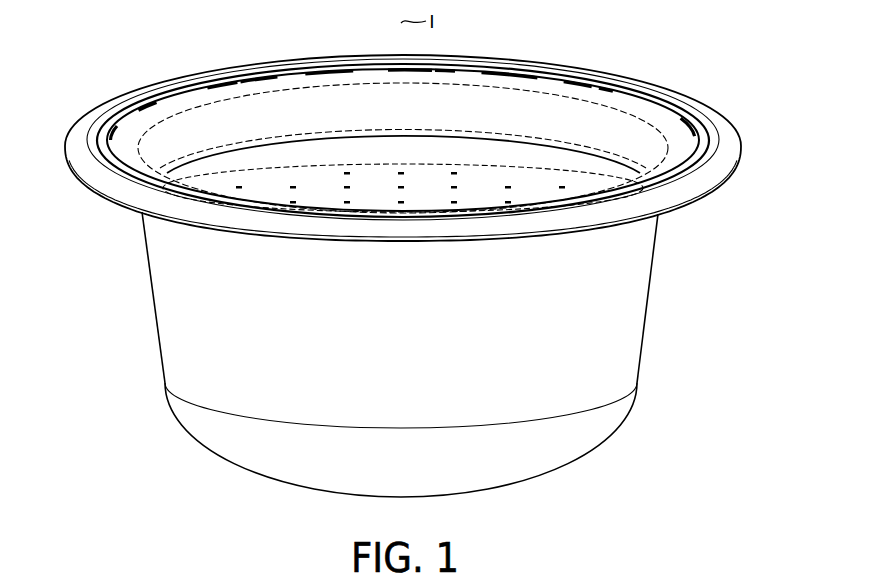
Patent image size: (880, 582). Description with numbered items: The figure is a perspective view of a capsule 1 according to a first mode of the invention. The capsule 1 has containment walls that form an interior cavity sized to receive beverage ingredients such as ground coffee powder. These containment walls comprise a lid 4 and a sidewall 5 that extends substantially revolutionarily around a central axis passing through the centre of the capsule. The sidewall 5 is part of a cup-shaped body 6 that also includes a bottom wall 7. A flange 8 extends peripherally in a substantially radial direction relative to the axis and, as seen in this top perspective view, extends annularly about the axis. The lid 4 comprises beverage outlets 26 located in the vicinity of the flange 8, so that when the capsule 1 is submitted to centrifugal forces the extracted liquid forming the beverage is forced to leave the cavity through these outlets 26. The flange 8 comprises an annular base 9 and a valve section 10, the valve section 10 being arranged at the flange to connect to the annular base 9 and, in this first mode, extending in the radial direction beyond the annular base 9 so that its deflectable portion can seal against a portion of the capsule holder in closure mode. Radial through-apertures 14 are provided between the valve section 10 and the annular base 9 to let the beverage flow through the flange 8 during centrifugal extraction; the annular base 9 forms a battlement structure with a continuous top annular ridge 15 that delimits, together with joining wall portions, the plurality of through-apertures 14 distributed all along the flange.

The capsule 1 is at (116, 292).
The lid 4 is at (257, 181).
The sidewall 5 is at (636, 279).
The cup-shaped body 6 is at (664, 350).
The bottom wall 7 is at (507, 486).
The flange 8 is at (673, 58).
The annular base 9 is at (672, 126).
The valve section 10 is at (715, 176).
The radial through-apertures 14 is at (504, 78).
The top annular ridge 15 is at (591, 73).
The beverage outlets 26 is at (347, 172).